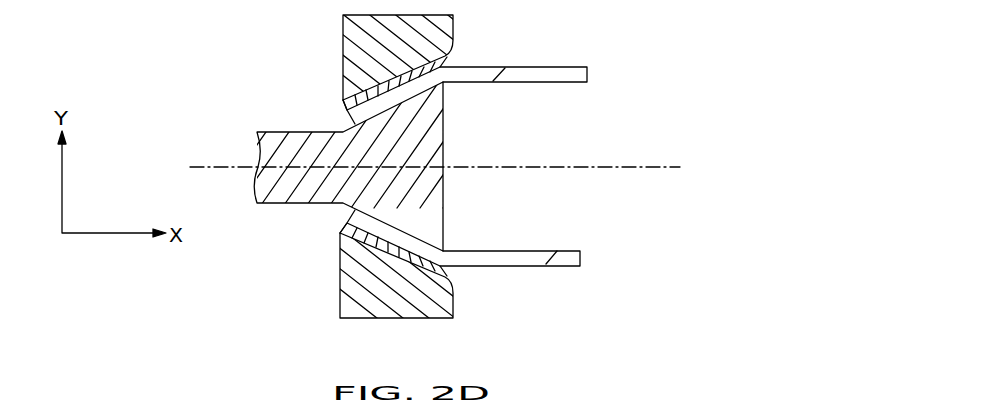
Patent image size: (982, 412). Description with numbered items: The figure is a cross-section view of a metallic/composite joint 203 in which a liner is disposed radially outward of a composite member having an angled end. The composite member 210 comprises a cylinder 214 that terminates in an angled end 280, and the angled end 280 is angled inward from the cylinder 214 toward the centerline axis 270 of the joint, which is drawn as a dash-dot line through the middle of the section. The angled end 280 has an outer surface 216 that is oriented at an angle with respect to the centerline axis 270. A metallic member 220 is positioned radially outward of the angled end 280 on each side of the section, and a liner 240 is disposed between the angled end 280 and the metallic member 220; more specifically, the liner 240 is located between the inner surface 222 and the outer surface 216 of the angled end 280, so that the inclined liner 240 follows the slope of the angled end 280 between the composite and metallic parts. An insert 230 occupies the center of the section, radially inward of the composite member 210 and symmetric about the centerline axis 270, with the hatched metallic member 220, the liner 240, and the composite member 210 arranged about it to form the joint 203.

The metallic/composite joint 203 is at (629, 53).
The composite member 210 is at (572, 82).
The cylinder 214 is at (507, 76).
The outer surface 216 is at (344, 238).
The metallic member 220 is at (347, 42).
The inner surface 222 is at (446, 250).
The insert 230 is at (259, 153).
The liner 240 is at (448, 56).
The centerline axis 270 is at (636, 166).
The angled end 280 is at (350, 106).